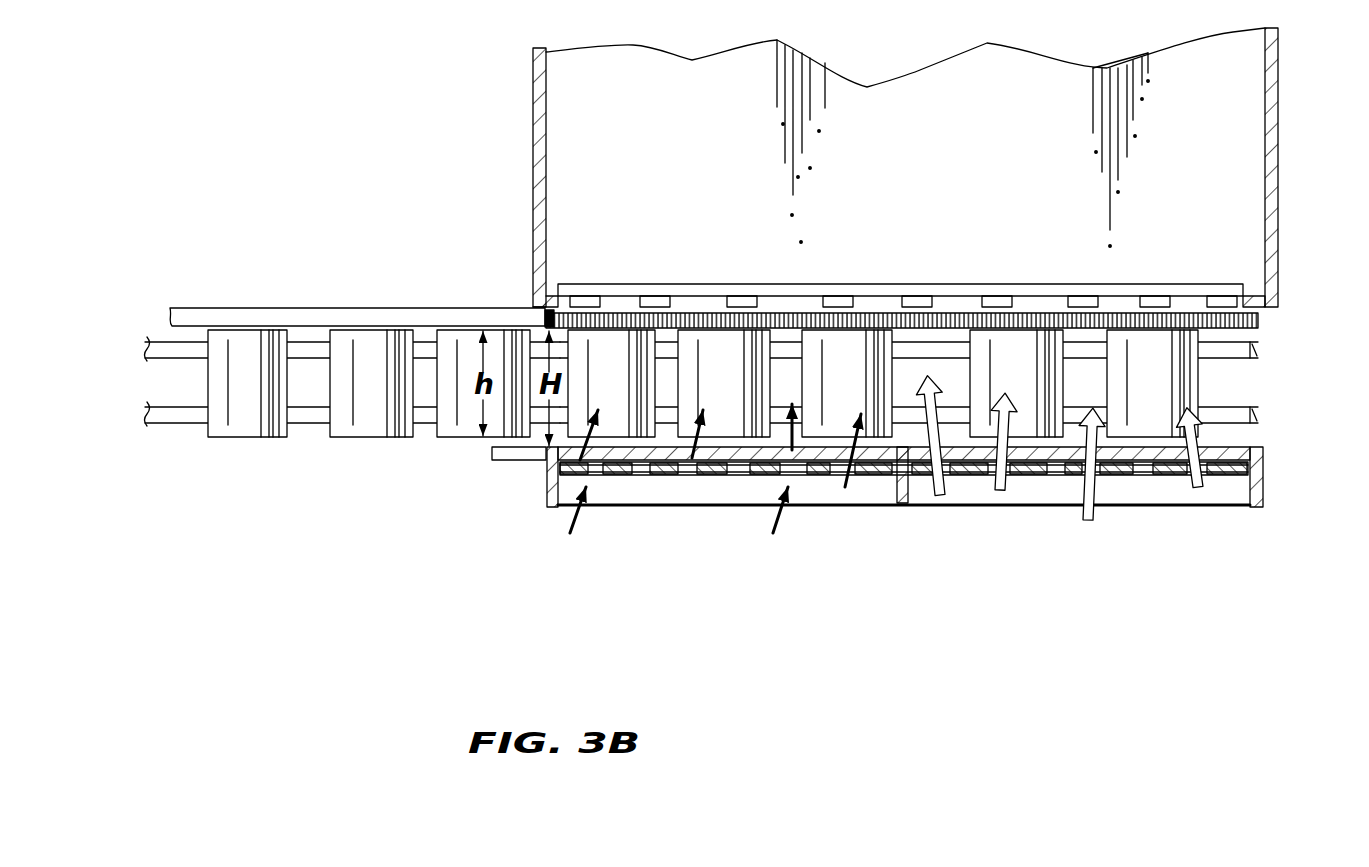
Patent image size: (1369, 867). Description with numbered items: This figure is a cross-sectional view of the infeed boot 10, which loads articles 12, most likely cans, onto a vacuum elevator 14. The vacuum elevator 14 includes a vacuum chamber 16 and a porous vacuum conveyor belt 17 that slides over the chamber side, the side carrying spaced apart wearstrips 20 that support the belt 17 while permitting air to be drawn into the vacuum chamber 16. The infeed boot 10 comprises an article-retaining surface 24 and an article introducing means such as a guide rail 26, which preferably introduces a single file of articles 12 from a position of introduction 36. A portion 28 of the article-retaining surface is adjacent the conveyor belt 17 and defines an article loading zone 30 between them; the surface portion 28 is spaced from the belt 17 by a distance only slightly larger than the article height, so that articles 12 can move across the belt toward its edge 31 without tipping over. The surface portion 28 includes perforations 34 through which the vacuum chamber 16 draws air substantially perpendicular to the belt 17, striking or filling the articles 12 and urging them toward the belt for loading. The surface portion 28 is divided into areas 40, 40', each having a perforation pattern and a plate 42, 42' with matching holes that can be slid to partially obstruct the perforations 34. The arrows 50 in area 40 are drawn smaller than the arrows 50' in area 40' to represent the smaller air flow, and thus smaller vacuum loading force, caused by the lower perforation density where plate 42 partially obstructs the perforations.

The infeed boot 10 is at (1272, 486).
The articles 12 is at (248, 427).
The vacuum elevator 14 is at (1296, 251).
The vacuum chamber 16 is at (1279, 93).
The vacuum conveyor belt 17 is at (954, 338).
The wearstrips 20 is at (833, 297).
The article-retaining surface 24 is at (515, 462).
The guide rail 26 is at (173, 352).
The article-retaining surface portion 28 is at (1243, 440).
The article loading zone 30 is at (1252, 380).
The edge 31 is at (1258, 320).
The perforations 34 is at (641, 456).
The position of introduction 36 is at (511, 297).
The area 40 is at (726, 517).
The area 40' is at (1079, 540).
The plate 42 is at (742, 517).
The plate 42' is at (1095, 540).
The arrows 50 is at (690, 467).
The arrows 50' is at (1063, 514).